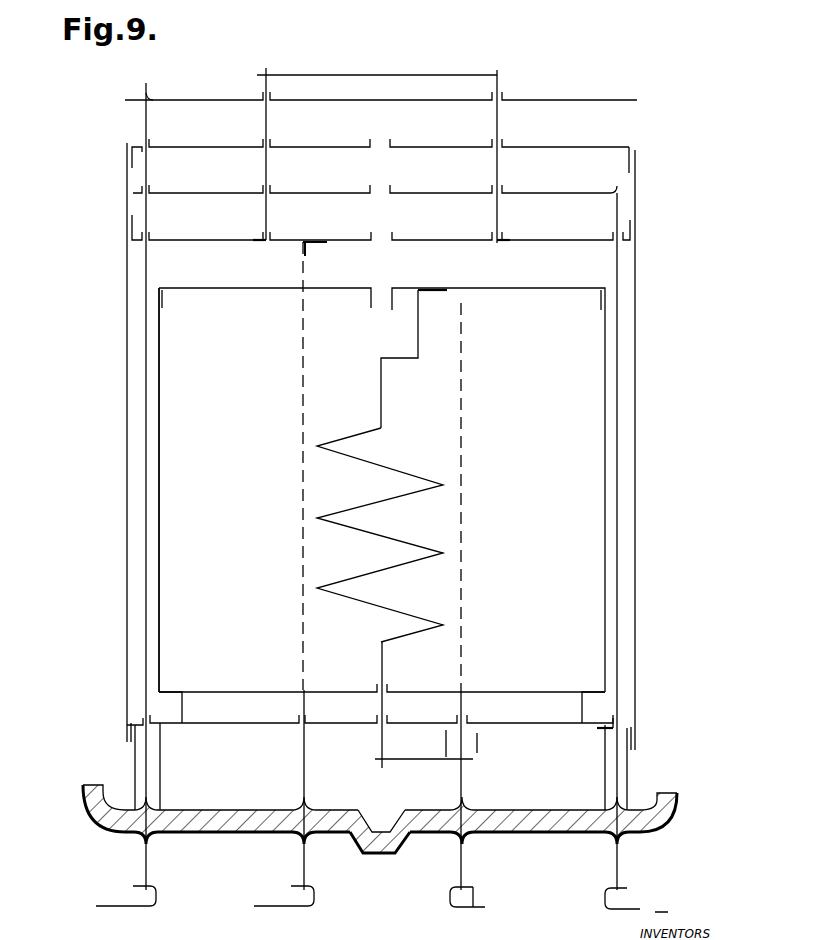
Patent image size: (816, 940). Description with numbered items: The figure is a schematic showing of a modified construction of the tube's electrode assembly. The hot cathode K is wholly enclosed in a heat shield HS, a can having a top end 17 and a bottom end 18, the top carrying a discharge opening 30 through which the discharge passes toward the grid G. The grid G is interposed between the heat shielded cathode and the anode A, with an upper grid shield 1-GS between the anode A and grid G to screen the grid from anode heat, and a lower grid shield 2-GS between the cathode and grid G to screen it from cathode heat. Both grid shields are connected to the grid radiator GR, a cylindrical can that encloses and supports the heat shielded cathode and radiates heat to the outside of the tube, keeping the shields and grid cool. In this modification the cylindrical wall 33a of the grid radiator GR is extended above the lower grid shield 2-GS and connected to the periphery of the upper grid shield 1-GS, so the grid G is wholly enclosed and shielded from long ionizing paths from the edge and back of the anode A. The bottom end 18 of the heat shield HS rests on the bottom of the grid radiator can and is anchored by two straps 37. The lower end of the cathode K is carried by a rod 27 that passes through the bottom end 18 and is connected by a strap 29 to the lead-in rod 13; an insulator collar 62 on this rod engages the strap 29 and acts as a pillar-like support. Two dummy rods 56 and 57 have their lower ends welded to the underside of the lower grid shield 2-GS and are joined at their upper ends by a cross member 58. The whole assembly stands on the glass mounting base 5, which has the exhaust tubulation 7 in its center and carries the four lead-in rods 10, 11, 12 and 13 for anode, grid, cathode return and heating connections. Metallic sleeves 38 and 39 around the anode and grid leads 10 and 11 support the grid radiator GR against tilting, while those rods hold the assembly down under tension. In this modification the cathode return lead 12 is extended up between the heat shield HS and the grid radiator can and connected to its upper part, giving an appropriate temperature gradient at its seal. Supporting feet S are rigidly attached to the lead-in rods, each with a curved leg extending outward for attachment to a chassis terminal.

The cross member 58 is at (357, 76).
The dummy rod 56 is at (266, 128).
The dummy rod 57 is at (497, 128).
The anode A is at (600, 101).
The upper grid shield 1-GS is at (624, 149).
The grid G is at (620, 193).
The lower grid shield 2-GS is at (624, 242).
The cylindrical wall 33a is at (127, 277).
The grid radiator GR is at (636, 419).
The top end 17 is at (248, 289).
The heat shield HS is at (606, 352).
The discharge opening 30 is at (391, 298).
The hot cathode K is at (397, 473).
The lead-in rod 13 is at (466, 447).
The bottom end 18 is at (487, 692).
The straps 37 is at (183, 706).
The rod 27 is at (380, 735).
The collar 62 is at (478, 746).
The strap 29 is at (404, 761).
The metallic sleeve 38 is at (133, 759).
The metallic sleeve 39 is at (630, 770).
The mounting base 5 is at (225, 832).
The exhaust tubulation 7 is at (384, 856).
The lead-in rod 10 is at (145, 865).
The lead-in rod 12 is at (303, 865).
The lead-in rod 11 is at (617, 866).
The supporting feet S is at (122, 906).